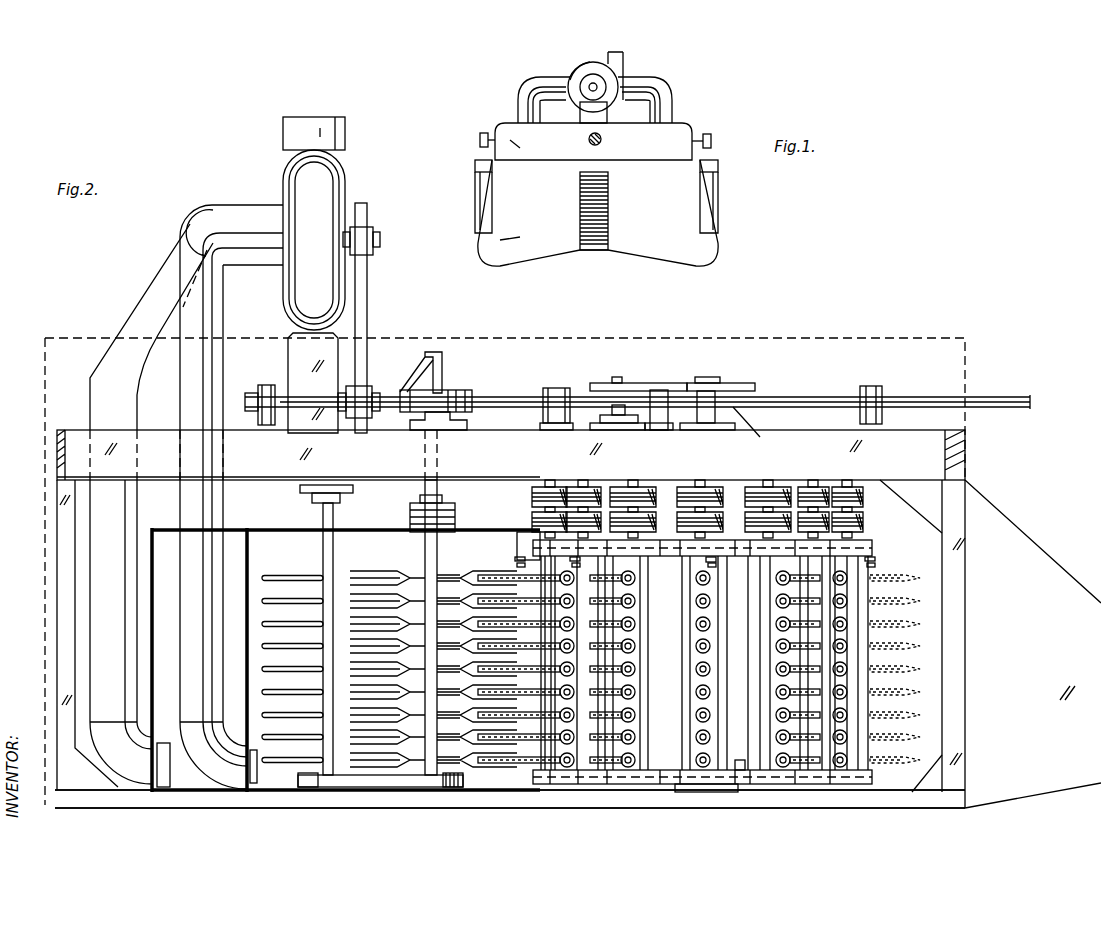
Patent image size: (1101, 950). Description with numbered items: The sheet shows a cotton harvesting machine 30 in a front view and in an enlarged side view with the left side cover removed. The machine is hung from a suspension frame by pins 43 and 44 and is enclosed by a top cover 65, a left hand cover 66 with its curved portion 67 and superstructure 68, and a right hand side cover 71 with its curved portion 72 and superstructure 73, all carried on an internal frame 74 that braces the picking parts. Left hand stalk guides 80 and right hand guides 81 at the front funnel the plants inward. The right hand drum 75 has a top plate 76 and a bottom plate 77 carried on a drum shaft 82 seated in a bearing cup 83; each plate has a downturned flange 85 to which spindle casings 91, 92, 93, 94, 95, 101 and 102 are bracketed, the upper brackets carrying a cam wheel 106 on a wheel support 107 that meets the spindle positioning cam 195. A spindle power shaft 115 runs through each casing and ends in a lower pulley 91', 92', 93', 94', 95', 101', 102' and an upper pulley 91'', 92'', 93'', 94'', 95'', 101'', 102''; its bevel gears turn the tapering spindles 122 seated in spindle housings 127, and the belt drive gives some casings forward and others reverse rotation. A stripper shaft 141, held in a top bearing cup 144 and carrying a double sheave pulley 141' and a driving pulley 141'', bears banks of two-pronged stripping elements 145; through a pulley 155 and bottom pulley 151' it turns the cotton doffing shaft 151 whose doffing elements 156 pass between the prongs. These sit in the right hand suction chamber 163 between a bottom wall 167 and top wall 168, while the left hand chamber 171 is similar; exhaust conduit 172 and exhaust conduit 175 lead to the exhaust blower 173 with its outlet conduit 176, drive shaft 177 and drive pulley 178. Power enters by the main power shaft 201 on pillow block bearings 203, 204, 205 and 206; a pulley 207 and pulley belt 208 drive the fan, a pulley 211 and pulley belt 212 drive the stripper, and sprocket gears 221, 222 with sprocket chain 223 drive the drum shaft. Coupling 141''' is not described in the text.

In FIG. 1, the cotton harvesting machine 30 is at (706, 91).
In FIG. 2, the cotton harvesting machine 30 is at (961, 315).
In FIG. 1, the pin 43 is at (710, 137).
In FIG. 1, the pin 44 is at (481, 138).
In FIG. 1, the top cover 65 is at (683, 125).
In FIG. 1, the left hand cover 66 is at (721, 185).
In FIG. 1, the curved portion 67 is at (720, 203).
In FIG. 1, the superstructure 68 is at (704, 163).
In FIG. 1, the right hand side cover 71 is at (475, 199).
In FIG. 1, the curved portion 72 is at (477, 183).
In FIG. 1, the superstructure 73 is at (478, 166).
In FIG. 2, the internal frame 74 is at (57, 457).
In FIG. 2, the right hand drum 75 is at (904, 615).
In FIG. 2, the top plate 76 is at (667, 556).
In FIG. 2, the bottom plate 77 is at (740, 784).
In FIG. 1, the left hand cotton stalk guides 80 is at (697, 233).
In FIG. 2, the left hand cotton stalk guides 80 is at (1058, 572).
In FIG. 1, the right hand guides 81 is at (497, 243).
In FIG. 2, the drum shaft 82 is at (755, 432).
In FIG. 2, the bearing cup 83 is at (727, 792).
In FIG. 2, the flange 85 is at (873, 548).
In FIG. 2, the spindle casing 91 is at (659, 663).
In FIG. 2, the lower pulley 91' is at (645, 496).
In FIG. 2, the upper pulley 91'' is at (635, 493).
In FIG. 2, the spindle casing 92 is at (693, 663).
In FIG. 2, the lower pulley 92' is at (717, 495).
In FIG. 2, the upper pulley 92'' is at (707, 493).
In FIG. 2, the spindle casing 93 is at (749, 663).
In FIG. 2, the lower pulley 93' is at (748, 550).
In FIG. 2, the upper pulley 93'' is at (780, 495).
In FIG. 2, the spindle casing 94 is at (779, 663).
In FIG. 2, the lower pulley 94' is at (849, 515).
In FIG. 2, the upper pulley 94'' is at (821, 488).
In FIG. 2, the spindle casing 95 is at (878, 663).
In FIG. 2, the lower pulley 95' is at (867, 524).
In FIG. 2, the upper pulley 95'' is at (882, 496).
In FIG. 2, the spindle casing 101 is at (559, 694).
In FIG. 2, the lower pulley 101' is at (524, 507).
In FIG. 2, the upper pulley 101'' is at (543, 493).
In FIG. 2, the spindle casing 102 is at (640, 663).
In FIG. 2, the lower pulley 102' is at (597, 495).
In FIG. 2, the upper pulley 102'' is at (599, 489).
In FIG. 2, the cam wheel 106 is at (518, 562).
In FIG. 2, the wheel support 107 is at (517, 548).
In FIG. 2, the spindle power shaft 115 is at (543, 490).
In FIG. 1, the tapering spindle 122 is at (607, 203).
In FIG. 2, the tapering spindle 122 is at (915, 597).
In FIG. 2, the spindle housing 127 is at (700, 603).
In FIG. 2, the stripper shaft 141 is at (405, 627).
In FIG. 2, the double sheave pulley 141' is at (409, 491).
In FIG. 2, the driving pulley 141'' is at (479, 782).
In FIG. 2, the coupling 141''' is at (460, 398).
In FIG. 2, the top bearing cup 144 is at (472, 572).
In FIG. 2, the two-pronged stripping elements 145 is at (375, 571).
In FIG. 2, the cotton doffing shaft 151 is at (313, 630).
In FIG. 2, the bottom pulley 151' is at (290, 774).
In FIG. 2, the pulley 155 is at (395, 787).
In FIG. 2, the doffing elements 156 is at (285, 576).
In FIG. 2, the right hand cotton evacuating or suction chamber 163 is at (233, 550).
In FIG. 2, the bottom wall 167 is at (290, 795).
In FIG. 2, the top wall 168 is at (262, 528).
In FIG. 2, the left hand cotton evacuating chamber 171 is at (152, 606).
In FIG. 1, the cotton exhaust conduit 172 is at (555, 82).
In FIG. 2, the cotton exhaust conduit 172 is at (217, 373).
In FIG. 1, the exhaust blower 173 is at (580, 67).
In FIG. 2, the exhaust blower 173 is at (283, 171).
In FIG. 1, the exhaust conduit 175 is at (668, 95).
In FIG. 2, the exhaust conduit 175 is at (140, 293).
In FIG. 1, the outlet conduit 176 is at (623, 62).
In FIG. 2, the outlet conduit 176 is at (342, 128).
In FIG. 1, the drive shaft 177 is at (598, 92).
In FIG. 2, the drive shaft 177 is at (381, 240).
In FIG. 1, the drive pulley 178 is at (607, 75).
In FIG. 2, the drive pulley 178 is at (370, 230).
In FIG. 2, the spindle positioning cam 195 is at (530, 545).
In FIG. 1, the main power shaft 201 is at (588, 143).
In FIG. 2, the main power shaft 201 is at (245, 402).
In FIG. 2, the pillow block bearing 203 is at (878, 386).
In FIG. 2, the pillow block bearing 204 is at (653, 425).
In FIG. 2, the pillow block bearing 205 is at (560, 388).
In FIG. 2, the pillow block bearing 206 is at (266, 385).
In FIG. 2, the pulley 207 is at (368, 388).
In FIG. 1, the pulley belt 208 is at (580, 113).
In FIG. 2, the pulley belt 208 is at (368, 318).
In FIG. 2, the pulley 211 is at (440, 372).
In FIG. 2, the pulley belt 212 is at (421, 368).
In FIG. 2, the sprocket gear 221 is at (605, 383).
In FIG. 2, the sprocket gear 222 is at (723, 383).
In FIG. 2, the sprocket chain 223 is at (665, 390).